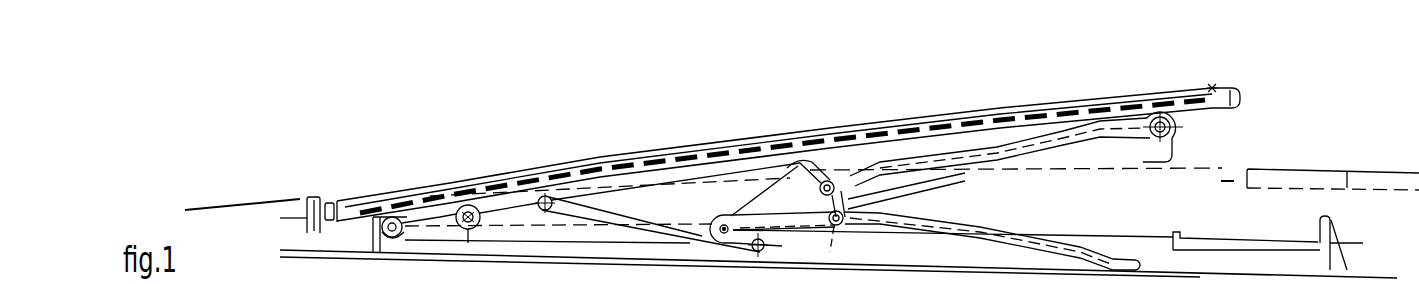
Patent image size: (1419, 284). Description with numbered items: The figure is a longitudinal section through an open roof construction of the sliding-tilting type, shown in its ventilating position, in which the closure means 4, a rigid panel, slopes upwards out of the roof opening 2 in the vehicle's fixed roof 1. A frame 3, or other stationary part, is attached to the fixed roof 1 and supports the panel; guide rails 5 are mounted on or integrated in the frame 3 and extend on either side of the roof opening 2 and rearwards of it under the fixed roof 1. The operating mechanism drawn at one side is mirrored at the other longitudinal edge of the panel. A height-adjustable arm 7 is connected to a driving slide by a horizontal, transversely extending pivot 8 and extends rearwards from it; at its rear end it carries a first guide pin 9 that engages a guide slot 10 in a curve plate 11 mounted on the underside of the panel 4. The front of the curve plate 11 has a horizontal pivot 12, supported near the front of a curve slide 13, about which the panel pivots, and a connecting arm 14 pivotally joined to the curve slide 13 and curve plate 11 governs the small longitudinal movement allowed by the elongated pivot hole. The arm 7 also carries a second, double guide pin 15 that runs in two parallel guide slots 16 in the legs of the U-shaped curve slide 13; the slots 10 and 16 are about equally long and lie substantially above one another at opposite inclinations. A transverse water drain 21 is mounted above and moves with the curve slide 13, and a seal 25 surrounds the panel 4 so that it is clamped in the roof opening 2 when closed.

The fixed roof 1 is at (312, 197).
The roof opening 2 is at (1263, 242).
The frame 3 is at (593, 258).
The closure means 4 is at (928, 121).
The guide rail 5 is at (1293, 270).
The arm 7 is at (796, 198).
The pivot 8 is at (727, 225).
The guide pin 9 is at (828, 181).
The guide slot 10 is at (1018, 152).
The curve plate 11 is at (1077, 132).
The pivot 12 is at (394, 217).
The curve slide 13 is at (970, 256).
The connecting arm 14 is at (650, 218).
The guide pin 15 is at (840, 192).
The guide slot 16 is at (1047, 250).
The water drain 21 is at (1282, 171).
The seal 25 is at (1229, 180).